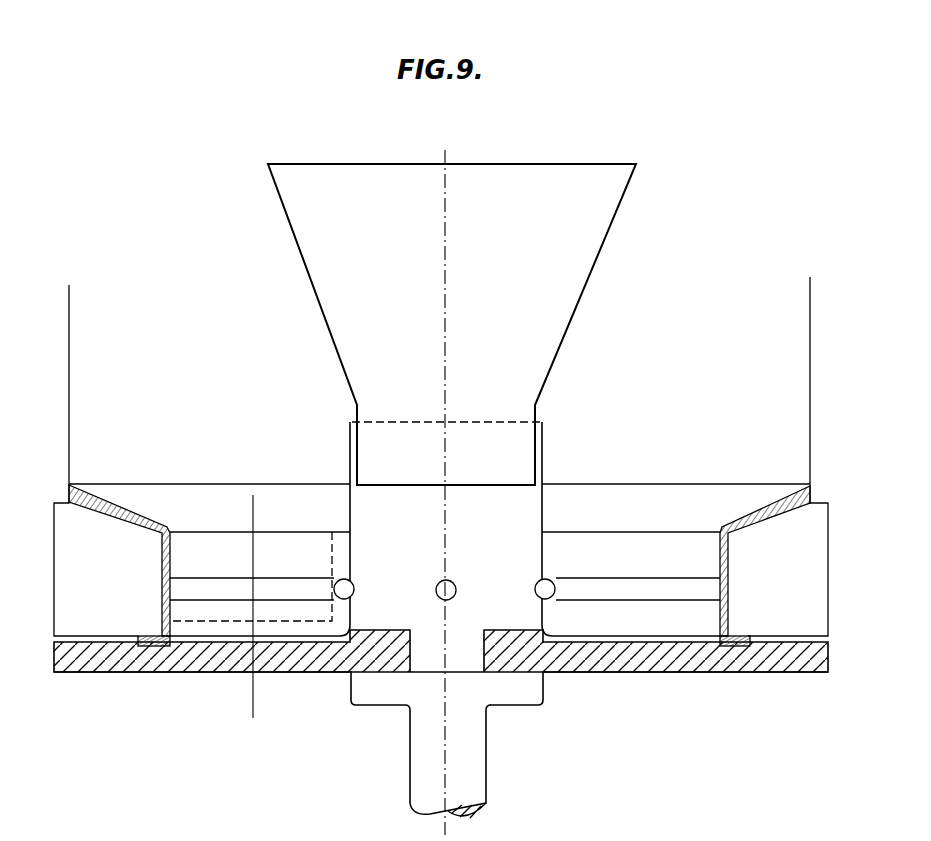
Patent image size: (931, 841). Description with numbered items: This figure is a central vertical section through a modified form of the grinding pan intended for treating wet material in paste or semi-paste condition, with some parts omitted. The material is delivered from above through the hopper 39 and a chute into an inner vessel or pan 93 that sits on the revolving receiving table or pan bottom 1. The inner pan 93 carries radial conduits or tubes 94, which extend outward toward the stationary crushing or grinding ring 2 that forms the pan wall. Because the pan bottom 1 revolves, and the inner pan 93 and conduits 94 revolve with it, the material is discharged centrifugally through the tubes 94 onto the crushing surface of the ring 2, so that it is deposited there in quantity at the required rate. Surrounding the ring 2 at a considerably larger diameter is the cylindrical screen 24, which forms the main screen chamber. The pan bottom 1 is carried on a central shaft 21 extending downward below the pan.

The revolving receiving table or pan bottom 1 is at (213, 672).
The stationary crushing or grinding ring 2 is at (170, 549).
The shaft 21 is at (470, 745).
The cylindrical screen 24 is at (72, 377).
The hopper 39 is at (452, 324).
The inner vessel or pan 93 is at (445, 529).
The radial conduits or tubes 94 is at (290, 589).